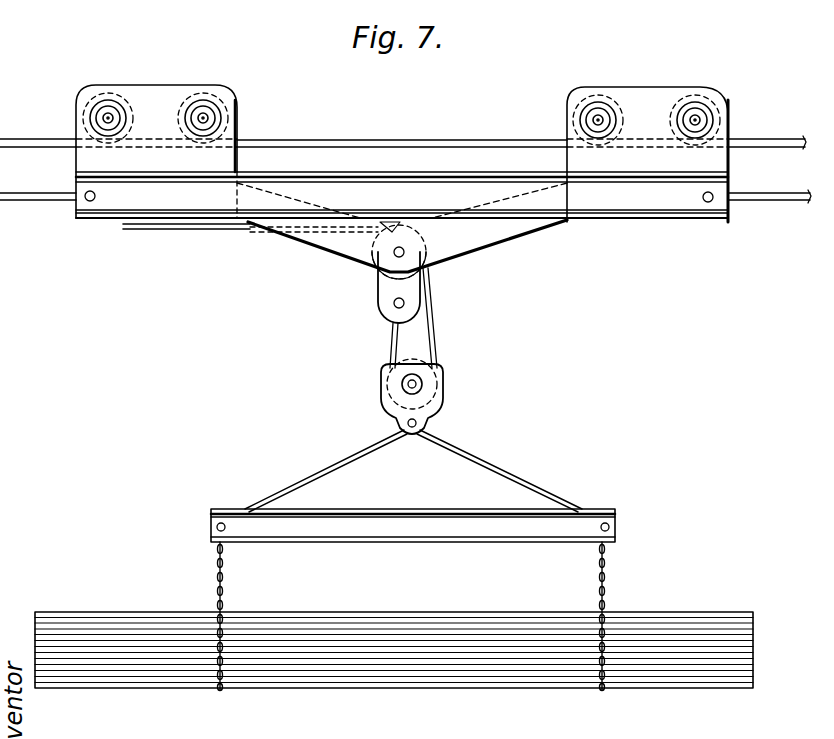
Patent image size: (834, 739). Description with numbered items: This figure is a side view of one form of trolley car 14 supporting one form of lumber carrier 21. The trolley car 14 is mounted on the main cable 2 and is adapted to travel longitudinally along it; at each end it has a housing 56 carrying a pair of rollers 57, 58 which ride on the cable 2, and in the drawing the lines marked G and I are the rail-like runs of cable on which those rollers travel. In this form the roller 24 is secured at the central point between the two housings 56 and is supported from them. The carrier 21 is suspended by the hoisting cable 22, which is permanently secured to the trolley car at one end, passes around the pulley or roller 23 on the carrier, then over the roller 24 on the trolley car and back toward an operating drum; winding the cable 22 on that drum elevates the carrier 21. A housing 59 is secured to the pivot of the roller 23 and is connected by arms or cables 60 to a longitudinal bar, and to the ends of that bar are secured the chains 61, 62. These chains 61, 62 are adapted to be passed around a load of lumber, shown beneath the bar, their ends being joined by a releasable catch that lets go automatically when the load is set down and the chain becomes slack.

The upper rail G is at (33, 142).
The lower rail I is at (27, 203).
The cable 2 is at (313, 141).
The trolley car 14 is at (345, 252).
The carrier 21 is at (416, 508).
The cable 22 is at (233, 228).
The pulley or roller 23 is at (440, 361).
The roller 24 is at (428, 248).
The housing 56 is at (655, 78).
The roller 57 is at (598, 112).
The roller 58 is at (108, 100).
The housing 59 is at (432, 401).
The arms or cables 60 is at (342, 462).
The chain 61 is at (607, 575).
The chain 62 is at (226, 578).